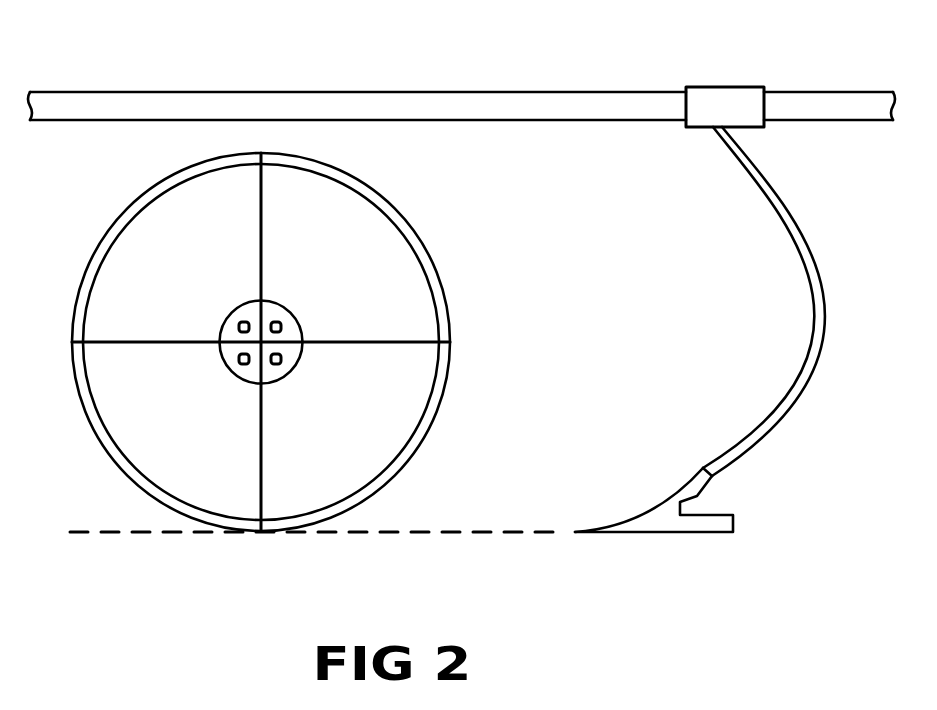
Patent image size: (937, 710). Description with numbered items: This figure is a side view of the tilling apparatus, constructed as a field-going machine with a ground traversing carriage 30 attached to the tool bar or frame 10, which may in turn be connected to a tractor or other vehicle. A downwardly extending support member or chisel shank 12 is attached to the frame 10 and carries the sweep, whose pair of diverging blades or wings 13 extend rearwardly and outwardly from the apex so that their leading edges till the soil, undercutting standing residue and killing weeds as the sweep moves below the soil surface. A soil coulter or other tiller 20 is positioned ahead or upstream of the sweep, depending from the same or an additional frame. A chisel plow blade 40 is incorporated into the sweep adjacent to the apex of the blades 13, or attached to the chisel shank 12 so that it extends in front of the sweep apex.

The tool bar or frame 10 is at (740, 78).
The chisel shank 12 is at (789, 301).
The blades or wings 13 is at (654, 539).
The soil coulter or tiller 20 is at (307, 342).
The ground traversing carriage 30 is at (461, 78).
The chisel plow blade 40 is at (639, 480).